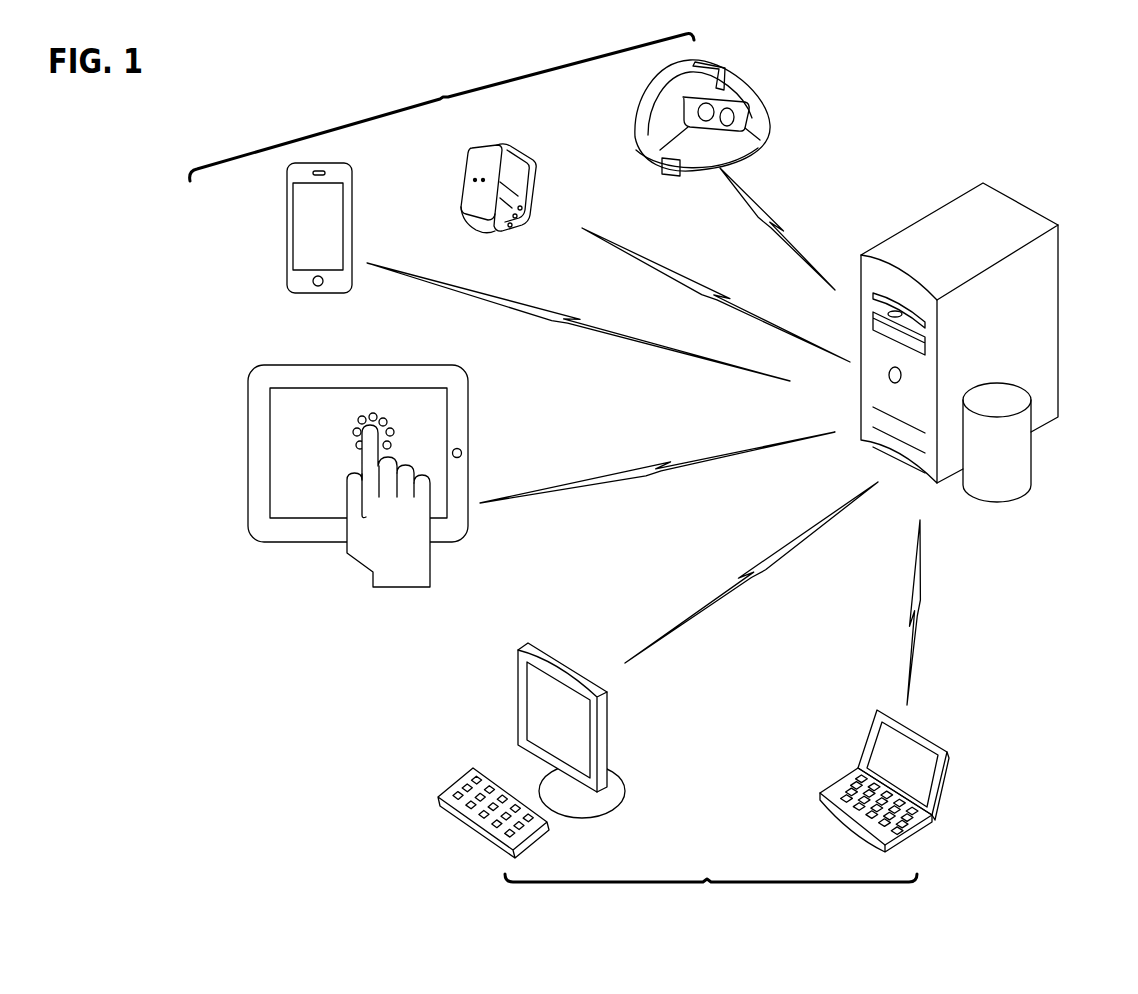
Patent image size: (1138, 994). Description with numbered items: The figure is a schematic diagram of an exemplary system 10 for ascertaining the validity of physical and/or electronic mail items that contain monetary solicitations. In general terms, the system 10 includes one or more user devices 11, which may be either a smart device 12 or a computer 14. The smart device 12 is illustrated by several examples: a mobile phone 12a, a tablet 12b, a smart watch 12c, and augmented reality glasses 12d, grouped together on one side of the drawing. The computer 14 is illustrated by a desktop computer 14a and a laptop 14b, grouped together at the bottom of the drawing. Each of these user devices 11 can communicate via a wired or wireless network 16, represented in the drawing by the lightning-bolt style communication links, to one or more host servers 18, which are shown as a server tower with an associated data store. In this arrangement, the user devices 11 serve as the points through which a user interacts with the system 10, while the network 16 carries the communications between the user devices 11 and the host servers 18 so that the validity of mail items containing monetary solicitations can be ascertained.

The system 10 is at (956, 122).
The user devices 11 is at (553, 486).
The smart device 12 is at (443, 97).
The mobile phone 12a is at (337, 193).
The tablet 12b is at (333, 367).
The smart watch 12c is at (514, 143).
The augmented reality glasses 12d is at (760, 92).
The computer 14 is at (707, 882).
The desktop computer 14a is at (600, 748).
The laptop 14b is at (928, 742).
The network 16 is at (710, 458).
The host servers 18 is at (1020, 252).